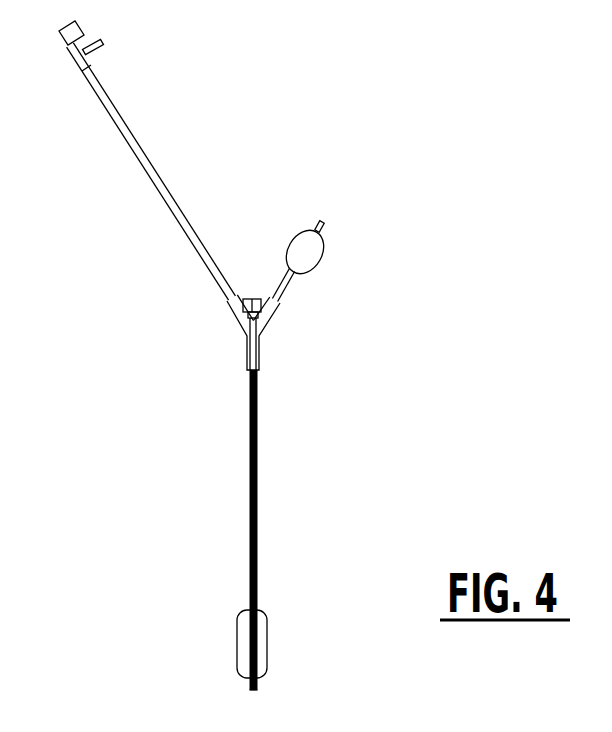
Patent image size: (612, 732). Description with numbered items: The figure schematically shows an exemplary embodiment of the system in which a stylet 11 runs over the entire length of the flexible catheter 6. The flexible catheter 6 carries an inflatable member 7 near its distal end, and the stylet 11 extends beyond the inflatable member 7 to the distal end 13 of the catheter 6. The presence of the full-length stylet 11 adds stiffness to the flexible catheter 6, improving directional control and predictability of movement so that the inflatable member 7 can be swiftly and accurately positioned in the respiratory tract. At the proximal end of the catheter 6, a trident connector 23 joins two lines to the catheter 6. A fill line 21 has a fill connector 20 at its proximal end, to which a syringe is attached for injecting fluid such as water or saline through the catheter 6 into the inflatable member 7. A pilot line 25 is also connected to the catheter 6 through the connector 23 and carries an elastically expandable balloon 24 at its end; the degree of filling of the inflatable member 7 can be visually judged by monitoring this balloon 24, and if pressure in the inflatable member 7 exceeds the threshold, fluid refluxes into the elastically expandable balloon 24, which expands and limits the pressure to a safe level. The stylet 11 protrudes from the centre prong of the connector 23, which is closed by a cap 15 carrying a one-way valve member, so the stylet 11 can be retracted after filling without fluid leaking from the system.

The fill connector 20 is at (65, 43).
The fill line 21 is at (162, 196).
The trident connector 23 is at (258, 337).
The cap 15 is at (259, 298).
The stylet 11 is at (248, 298).
The pilot line 25 is at (290, 288).
The elastically expandable balloon 24 is at (306, 258).
The flexible catheter 6 is at (258, 492).
The inflatable member 7 is at (262, 640).
The distal end of the catheter 13 is at (293, 692).